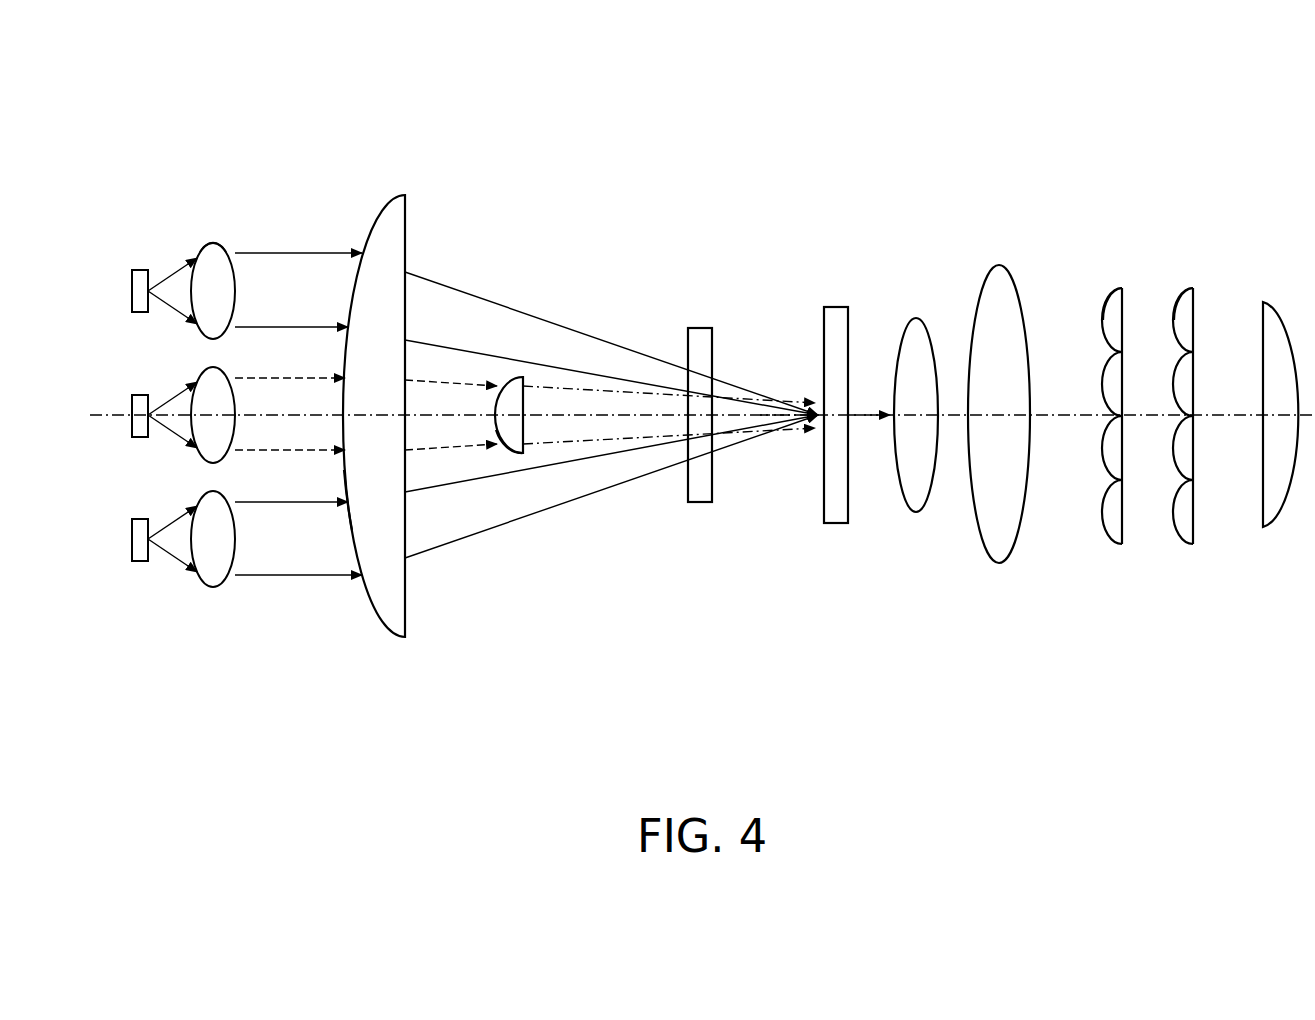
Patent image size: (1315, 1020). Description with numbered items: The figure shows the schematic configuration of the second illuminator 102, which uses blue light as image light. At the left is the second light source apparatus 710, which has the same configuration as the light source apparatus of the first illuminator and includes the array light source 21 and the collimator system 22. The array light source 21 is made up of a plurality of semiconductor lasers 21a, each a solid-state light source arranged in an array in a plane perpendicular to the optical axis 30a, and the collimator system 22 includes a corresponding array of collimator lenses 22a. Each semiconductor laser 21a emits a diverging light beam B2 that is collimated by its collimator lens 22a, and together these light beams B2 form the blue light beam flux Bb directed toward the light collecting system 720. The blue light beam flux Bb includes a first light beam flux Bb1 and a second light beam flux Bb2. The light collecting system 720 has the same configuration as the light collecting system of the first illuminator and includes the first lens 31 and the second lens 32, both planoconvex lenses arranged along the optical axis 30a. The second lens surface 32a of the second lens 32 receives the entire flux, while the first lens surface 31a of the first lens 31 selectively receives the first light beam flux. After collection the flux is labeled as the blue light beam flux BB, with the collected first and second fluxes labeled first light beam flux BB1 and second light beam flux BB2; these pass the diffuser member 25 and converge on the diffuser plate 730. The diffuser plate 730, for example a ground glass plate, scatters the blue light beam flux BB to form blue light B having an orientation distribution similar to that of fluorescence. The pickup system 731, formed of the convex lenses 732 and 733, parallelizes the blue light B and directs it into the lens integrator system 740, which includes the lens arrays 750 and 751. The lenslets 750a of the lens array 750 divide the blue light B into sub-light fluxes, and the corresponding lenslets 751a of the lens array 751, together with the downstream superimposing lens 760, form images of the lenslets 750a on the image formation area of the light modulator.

The second illuminator 102 is at (1157, 126).
The array light source 21 is at (138, 564).
The semiconductor laser 21a is at (140, 268).
The collimator system 22 is at (222, 592).
The collimator lens 22a is at (213, 252).
The light beam B2 is at (172, 320).
The optical axis 30a is at (103, 412).
The blue light beam flux Bb is at (365, 160).
The first light beam flux Bb1 is at (303, 466).
The second light beam flux Bb2 is at (303, 590).
The second lens 32 is at (396, 578).
The second lens surface 32a is at (348, 548).
The first lens 31 is at (522, 455).
The first lens surface 31a is at (505, 445).
The blue light beam flux BB is at (627, 210).
The first light beam flux BB1 is at (452, 453).
The second light beam flux BB2 is at (560, 517).
The diffuser member 25 is at (700, 492).
The diffuser plate 730 is at (833, 508).
The blue light B is at (864, 412).
The lens 732 is at (923, 497).
The lens 733 is at (993, 543).
The pickup system 731 is at (1020, 660).
The lens array 750 is at (1108, 546).
The lens array 751 is at (1176, 546).
The lens integrator system 740 is at (1208, 645).
The lenslet 750a is at (1104, 297).
The lenslet 751a is at (1179, 292).
The superimposing lens 760 is at (1277, 503).
The second light source apparatus 710 is at (237, 686).
The light collecting system 720 is at (543, 686).